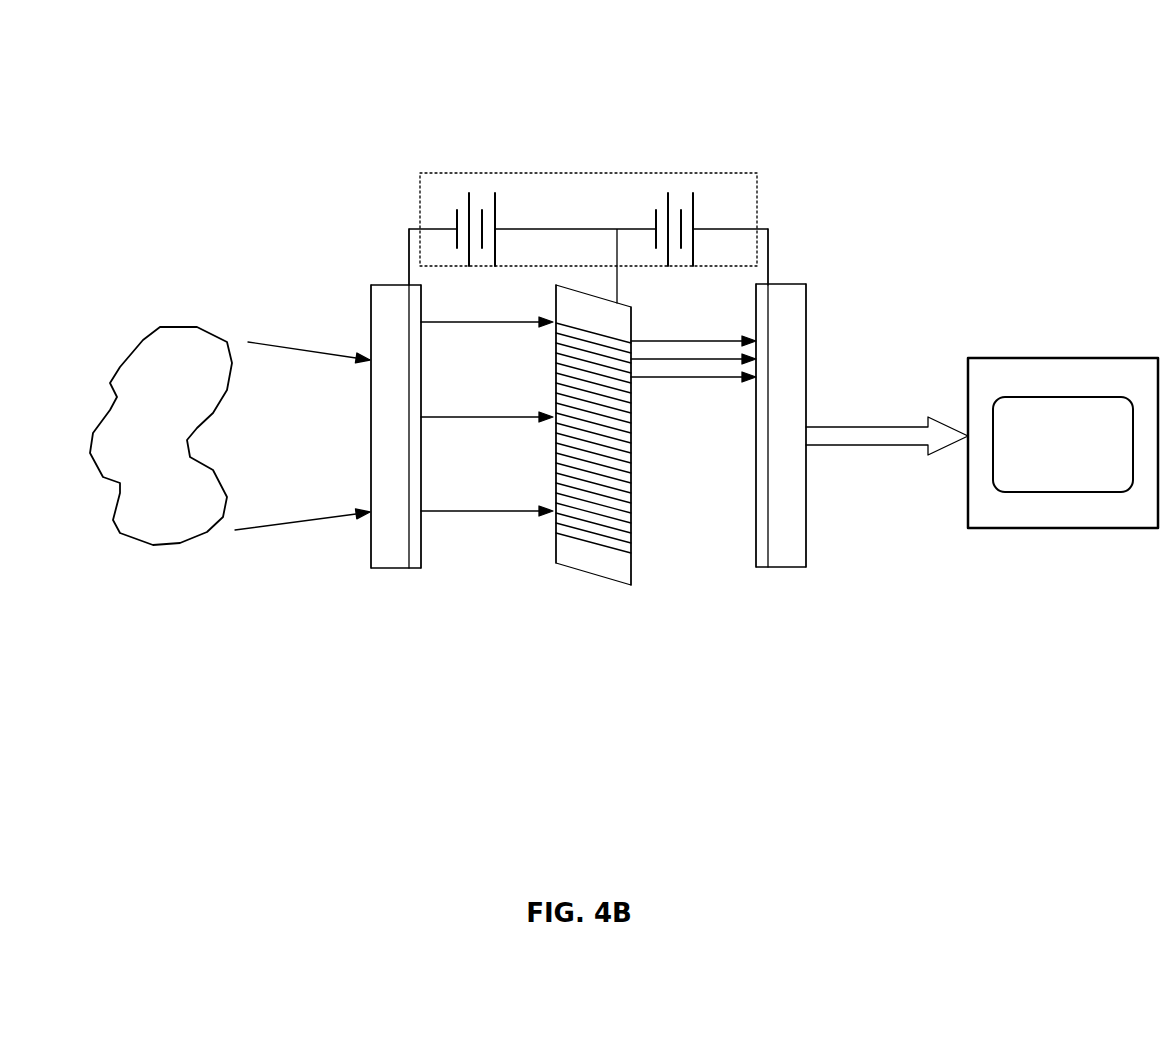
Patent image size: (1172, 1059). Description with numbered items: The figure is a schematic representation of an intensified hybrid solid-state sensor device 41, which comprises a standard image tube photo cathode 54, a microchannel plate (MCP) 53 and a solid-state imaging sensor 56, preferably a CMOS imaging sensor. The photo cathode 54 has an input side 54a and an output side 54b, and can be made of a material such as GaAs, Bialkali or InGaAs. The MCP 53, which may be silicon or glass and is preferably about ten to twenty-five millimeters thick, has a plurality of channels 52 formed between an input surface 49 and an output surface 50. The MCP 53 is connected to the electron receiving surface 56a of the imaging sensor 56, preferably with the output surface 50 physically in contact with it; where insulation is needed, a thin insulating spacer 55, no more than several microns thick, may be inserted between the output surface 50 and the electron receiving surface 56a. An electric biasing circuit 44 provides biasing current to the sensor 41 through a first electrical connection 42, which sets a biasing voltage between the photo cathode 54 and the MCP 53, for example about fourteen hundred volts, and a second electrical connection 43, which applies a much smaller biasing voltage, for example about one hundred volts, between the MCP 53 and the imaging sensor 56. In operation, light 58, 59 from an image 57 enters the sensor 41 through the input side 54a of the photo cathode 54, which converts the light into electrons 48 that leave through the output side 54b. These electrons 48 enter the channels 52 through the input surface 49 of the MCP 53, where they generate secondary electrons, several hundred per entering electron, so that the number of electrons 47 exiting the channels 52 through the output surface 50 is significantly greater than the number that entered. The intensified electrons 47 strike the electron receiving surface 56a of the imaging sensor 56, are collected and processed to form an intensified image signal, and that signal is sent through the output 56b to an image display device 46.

The intensified hybrid solid-state sensor device 41 is at (603, 123).
The first electrical connection 42 is at (482, 176).
The second electrical connection 43 is at (680, 176).
The electric biasing circuit 44 is at (766, 197).
The image display device 46 is at (1043, 342).
The electrons exiting channels 47 is at (681, 393).
The electrons 48 is at (505, 416).
The input surface 49 is at (556, 492).
The output surface 50 is at (631, 490).
The channels 52 is at (556, 540).
The microchannel plate (MCP) 53 is at (589, 602).
The photo cathode 54 is at (380, 620).
The input side 54a is at (370, 549).
The output side 54b is at (421, 549).
The insulating spacer 55 is at (756, 547).
The solid-state imaging sensor 56 is at (797, 620).
The electron receiving surface 56a is at (784, 535).
The output 56b is at (806, 493).
The image 57 is at (161, 436).
The light 58 is at (302, 507).
The light 59 is at (309, 360).